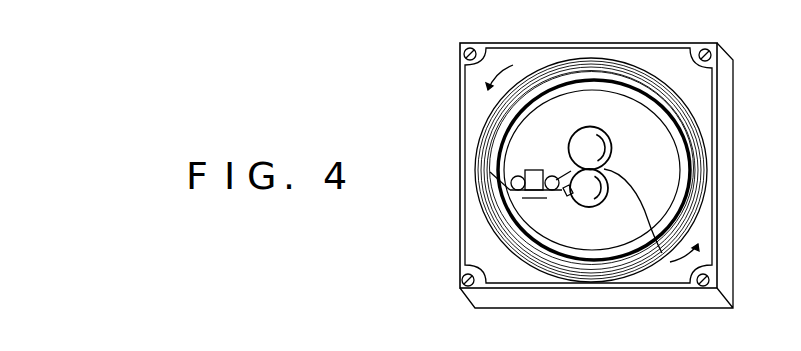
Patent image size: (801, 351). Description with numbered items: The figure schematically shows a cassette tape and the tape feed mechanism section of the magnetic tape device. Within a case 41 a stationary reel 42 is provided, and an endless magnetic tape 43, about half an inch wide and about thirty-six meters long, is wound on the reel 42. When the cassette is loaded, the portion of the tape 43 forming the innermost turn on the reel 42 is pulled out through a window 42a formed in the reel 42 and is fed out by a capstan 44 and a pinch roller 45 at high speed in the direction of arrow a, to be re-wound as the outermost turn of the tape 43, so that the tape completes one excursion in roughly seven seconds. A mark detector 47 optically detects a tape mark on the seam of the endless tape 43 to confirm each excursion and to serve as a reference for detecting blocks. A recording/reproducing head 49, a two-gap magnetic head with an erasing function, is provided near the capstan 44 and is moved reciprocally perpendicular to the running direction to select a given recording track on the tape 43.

The case 41 is at (722, 100).
The stationary reel 42 is at (672, 136).
The window 42a is at (490, 172).
The endless magnetic tape 43 is at (480, 123).
The capstan 44 is at (593, 128).
The pinch roller 45 is at (590, 197).
The mark detector 47 is at (568, 196).
The recording/reproducing head 49 is at (533, 170).